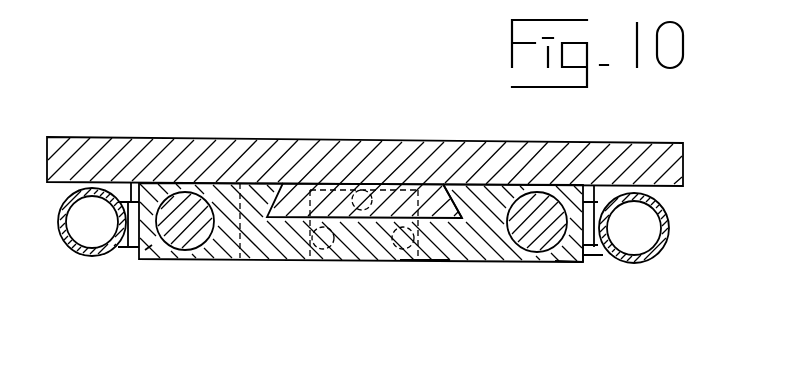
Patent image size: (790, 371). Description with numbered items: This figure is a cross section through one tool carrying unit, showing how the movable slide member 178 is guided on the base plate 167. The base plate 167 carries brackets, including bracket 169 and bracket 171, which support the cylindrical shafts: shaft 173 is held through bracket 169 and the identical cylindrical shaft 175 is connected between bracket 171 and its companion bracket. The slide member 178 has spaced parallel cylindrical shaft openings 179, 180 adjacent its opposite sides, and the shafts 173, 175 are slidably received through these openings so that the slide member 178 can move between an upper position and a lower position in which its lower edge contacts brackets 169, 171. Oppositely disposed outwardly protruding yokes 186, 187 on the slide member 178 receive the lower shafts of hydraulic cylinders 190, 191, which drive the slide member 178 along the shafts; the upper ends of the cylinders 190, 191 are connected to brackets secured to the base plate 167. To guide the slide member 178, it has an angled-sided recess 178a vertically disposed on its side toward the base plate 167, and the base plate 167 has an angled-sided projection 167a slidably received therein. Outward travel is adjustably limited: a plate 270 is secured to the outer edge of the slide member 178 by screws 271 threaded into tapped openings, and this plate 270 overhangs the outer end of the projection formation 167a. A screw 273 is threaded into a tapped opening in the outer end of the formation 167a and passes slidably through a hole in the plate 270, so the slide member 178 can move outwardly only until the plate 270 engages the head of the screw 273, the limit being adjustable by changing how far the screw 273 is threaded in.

The base plate 167 is at (393, 140).
The angled-sided projection 167a is at (425, 263).
The bracket 169 is at (139, 258).
The bracket 171 is at (588, 255).
The shaft 173 is at (193, 258).
The cylindrical shaft 175 is at (563, 263).
The movable slide member 178 is at (490, 263).
The angled-sided recess 178a is at (283, 218).
The cylindrical shaft opening 179 is at (165, 258).
The cylindrical shaft opening 180 is at (523, 263).
The yoke 186 is at (120, 256).
The yoke 187 is at (602, 256).
The hydraulic cylinder 190 is at (78, 254).
The hydraulic cylinder 191 is at (628, 266).
The plate 270 is at (308, 260).
The screws 271 is at (323, 249).
The screw 273 is at (362, 190).